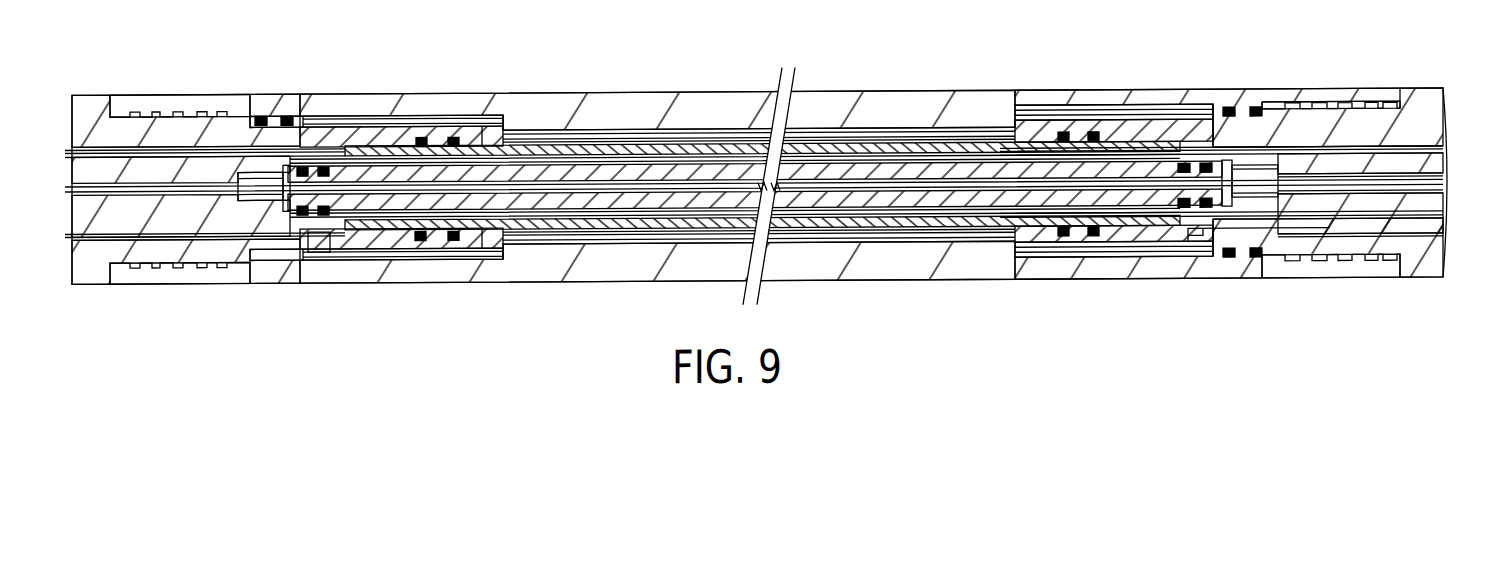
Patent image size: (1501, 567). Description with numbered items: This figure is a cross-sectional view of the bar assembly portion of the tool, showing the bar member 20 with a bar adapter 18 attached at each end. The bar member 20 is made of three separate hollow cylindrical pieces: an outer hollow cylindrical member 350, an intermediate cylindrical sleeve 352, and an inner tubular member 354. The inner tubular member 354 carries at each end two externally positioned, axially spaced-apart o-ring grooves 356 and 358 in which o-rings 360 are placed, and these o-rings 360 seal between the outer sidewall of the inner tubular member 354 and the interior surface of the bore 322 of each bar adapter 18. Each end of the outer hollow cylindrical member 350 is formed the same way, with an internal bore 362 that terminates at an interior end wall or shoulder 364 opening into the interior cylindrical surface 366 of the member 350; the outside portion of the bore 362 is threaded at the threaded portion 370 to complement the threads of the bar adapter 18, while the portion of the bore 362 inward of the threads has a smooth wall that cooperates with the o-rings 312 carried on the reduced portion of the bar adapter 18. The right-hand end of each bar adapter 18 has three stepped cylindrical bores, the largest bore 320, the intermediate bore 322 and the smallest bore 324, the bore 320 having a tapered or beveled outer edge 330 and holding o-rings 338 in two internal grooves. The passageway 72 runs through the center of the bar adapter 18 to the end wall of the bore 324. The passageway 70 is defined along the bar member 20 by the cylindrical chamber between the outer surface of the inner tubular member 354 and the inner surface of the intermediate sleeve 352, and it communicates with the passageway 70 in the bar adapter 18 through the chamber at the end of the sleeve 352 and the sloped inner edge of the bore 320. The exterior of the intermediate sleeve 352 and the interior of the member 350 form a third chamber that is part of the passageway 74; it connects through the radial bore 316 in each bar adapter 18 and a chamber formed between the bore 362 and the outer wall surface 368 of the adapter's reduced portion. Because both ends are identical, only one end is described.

The bar adapter 18 is at (1419, 82).
The bar member 20 is at (637, 40).
The passageway 70 is at (66, 147).
The passageway 72 is at (72, 186).
The passageway 74 is at (678, 133).
The o-rings 312 is at (288, 258).
The radial bore 316 is at (318, 252).
The stepped cylindrical bore 320 is at (374, 147).
The stepped cylindrical bore 322 is at (283, 163).
The stepped cylindrical bore 324 is at (262, 197).
The tapered outer edge 330 is at (500, 232).
The o-rings 338 is at (450, 136).
The outer hollow cylindrical member 350 is at (858, 117).
The intermediate cylindrical sleeve 352 is at (948, 138).
The inner tubular member 354 is at (940, 200).
The o-ring groove 356 is at (1160, 222).
The o-ring groove 358 is at (1223, 206).
The o-rings 360 is at (1182, 165).
The internal bore 362 is at (388, 258).
The interior end wall 364 is at (488, 112).
The interior cylindrical surface 366 is at (717, 232).
The outer wall surface 368 is at (418, 238).
The threaded portion 370 is at (119, 115).